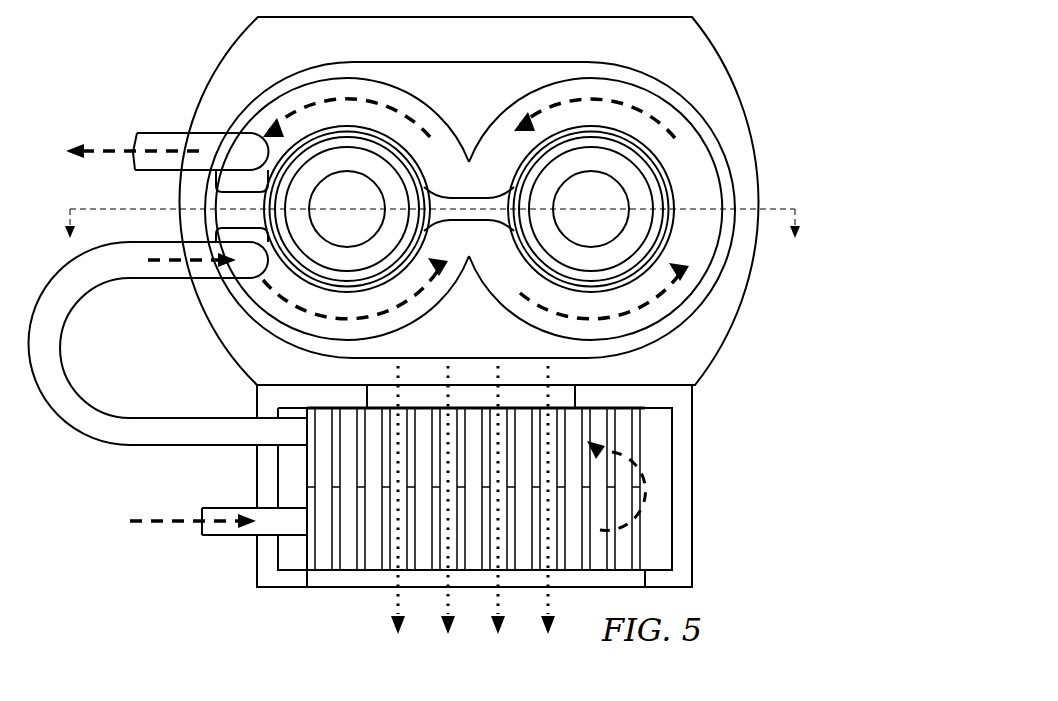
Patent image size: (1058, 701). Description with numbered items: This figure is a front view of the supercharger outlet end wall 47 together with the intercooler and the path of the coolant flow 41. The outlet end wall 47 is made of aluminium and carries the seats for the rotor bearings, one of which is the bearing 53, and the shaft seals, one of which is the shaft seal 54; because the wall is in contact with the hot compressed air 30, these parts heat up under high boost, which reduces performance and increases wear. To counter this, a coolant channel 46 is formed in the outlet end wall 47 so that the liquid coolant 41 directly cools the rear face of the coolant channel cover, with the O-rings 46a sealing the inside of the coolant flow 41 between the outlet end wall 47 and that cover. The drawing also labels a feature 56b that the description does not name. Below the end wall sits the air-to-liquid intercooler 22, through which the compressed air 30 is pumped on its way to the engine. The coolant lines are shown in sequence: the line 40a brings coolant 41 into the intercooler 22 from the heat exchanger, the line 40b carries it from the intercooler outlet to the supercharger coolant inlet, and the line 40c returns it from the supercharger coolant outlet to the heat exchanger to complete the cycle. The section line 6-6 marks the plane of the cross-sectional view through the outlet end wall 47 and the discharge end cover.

The section line 6- 6 is at (432, 235).
The intercooler 22 is at (682, 447).
The compressed air 30 is at (362, 648).
The coolant line 40a is at (228, 538).
The coolant line 40b is at (157, 430).
The coolant line 40c is at (180, 142).
The coolant flow 41 is at (106, 130).
The coolant channel 46 is at (687, 204).
The O-rings 46a is at (303, 272).
The outlet end wall 47 is at (690, 56).
The bearing 53 is at (290, 196).
The shaft seal 54 is at (617, 194).
The partition wall 56b is at (342, 70).